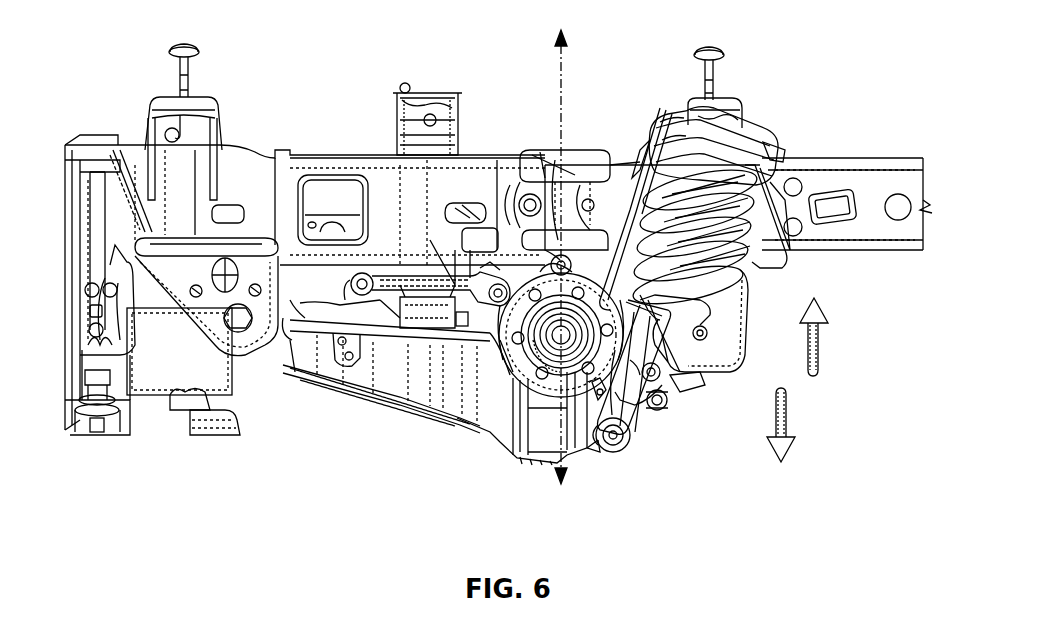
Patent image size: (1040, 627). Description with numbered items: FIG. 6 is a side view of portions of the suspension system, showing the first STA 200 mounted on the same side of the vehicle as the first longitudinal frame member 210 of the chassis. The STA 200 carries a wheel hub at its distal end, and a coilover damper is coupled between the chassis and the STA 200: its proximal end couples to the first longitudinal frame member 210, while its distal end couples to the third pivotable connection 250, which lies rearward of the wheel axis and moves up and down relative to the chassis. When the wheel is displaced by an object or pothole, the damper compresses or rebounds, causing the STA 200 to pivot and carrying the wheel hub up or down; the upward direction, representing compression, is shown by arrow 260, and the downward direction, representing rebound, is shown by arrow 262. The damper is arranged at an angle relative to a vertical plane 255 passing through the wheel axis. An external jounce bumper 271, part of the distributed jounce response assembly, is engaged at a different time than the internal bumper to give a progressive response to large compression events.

The first STA 200 is at (406, 398).
The first longitudinal frame member 210 is at (873, 180).
The third pivotable connection 250 is at (614, 452).
The vertical plane 255 is at (565, 73).
The arrow 260 is at (818, 345).
The arrow 262 is at (786, 418).
The external jounce bumper 271 is at (443, 258).